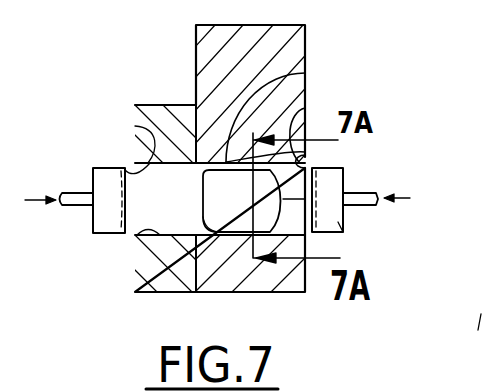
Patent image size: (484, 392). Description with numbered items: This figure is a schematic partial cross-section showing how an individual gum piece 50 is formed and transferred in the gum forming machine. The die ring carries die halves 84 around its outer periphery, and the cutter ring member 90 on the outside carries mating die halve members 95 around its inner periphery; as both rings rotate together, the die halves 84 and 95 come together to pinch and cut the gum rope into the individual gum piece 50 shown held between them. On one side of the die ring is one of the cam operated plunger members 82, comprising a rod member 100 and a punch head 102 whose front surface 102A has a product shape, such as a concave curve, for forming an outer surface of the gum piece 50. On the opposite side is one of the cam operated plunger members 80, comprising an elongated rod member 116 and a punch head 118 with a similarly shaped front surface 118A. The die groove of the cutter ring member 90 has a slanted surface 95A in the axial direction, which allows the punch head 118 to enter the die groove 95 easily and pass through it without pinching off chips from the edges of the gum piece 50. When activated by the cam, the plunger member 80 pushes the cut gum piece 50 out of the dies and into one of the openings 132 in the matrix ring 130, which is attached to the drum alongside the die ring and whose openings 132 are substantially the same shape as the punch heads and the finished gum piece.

The gum pieces 50 is at (203, 190).
The cam operated plunger members 80 is at (340, 222).
The cam operated plunger members 82 is at (86, 220).
The die halves 84 is at (203, 215).
The cutter ring member 90 is at (295, 33).
The mating die halve members 95 is at (295, 76).
The slanted surfaces 95A is at (305, 108).
The rod members 100 is at (82, 192).
The punch heads 102 is at (108, 167).
The front surface 102A is at (135, 125).
The elongated rod member 116 is at (360, 205).
The punch head 118 is at (330, 166).
The front surface 118A is at (305, 152).
The matrix ring 130 is at (147, 107).
The die holes or openings 132 is at (133, 237).